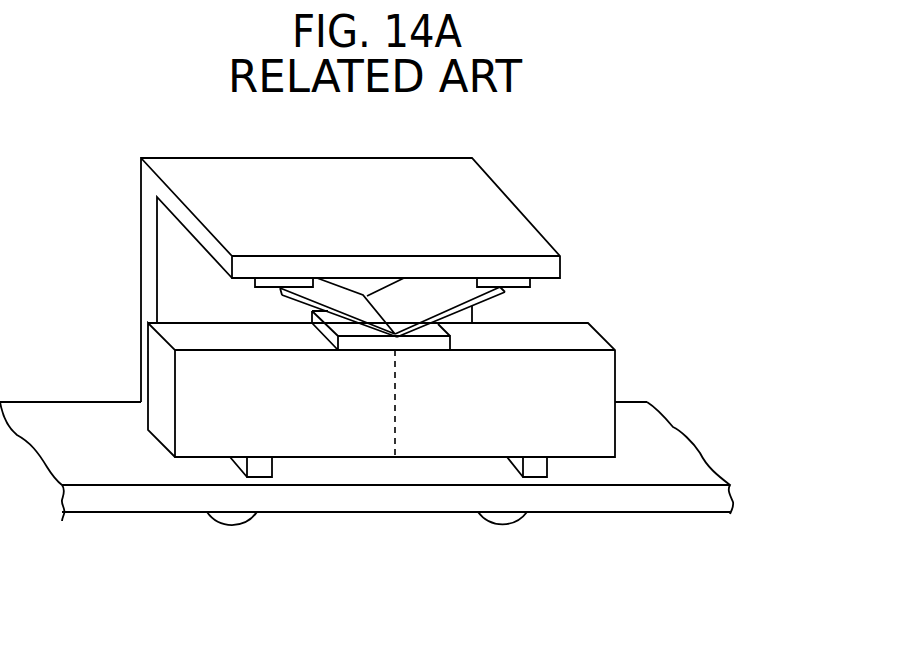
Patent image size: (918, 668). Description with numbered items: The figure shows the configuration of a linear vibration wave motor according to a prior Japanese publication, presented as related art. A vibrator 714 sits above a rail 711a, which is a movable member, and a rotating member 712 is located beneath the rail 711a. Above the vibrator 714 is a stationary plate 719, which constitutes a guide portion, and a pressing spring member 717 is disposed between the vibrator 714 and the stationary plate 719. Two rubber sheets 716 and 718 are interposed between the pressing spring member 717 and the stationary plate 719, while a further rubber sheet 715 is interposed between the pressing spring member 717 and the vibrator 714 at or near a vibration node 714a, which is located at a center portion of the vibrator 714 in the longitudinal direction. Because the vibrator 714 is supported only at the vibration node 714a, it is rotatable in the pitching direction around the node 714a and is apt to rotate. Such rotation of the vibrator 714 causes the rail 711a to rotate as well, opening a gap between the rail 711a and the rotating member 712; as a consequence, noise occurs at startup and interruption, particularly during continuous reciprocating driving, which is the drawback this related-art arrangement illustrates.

The rail 711a is at (657, 500).
The rotating member 712 is at (508, 515).
The vibrator 714 is at (582, 373).
The vibration node 714a is at (395, 403).
The rubber sheet 715 is at (437, 345).
The rubber sheet 716 is at (517, 285).
The pressing spring member 717 is at (494, 295).
The rubber sheet 718 is at (273, 284).
The stationary plate 719 is at (477, 197).